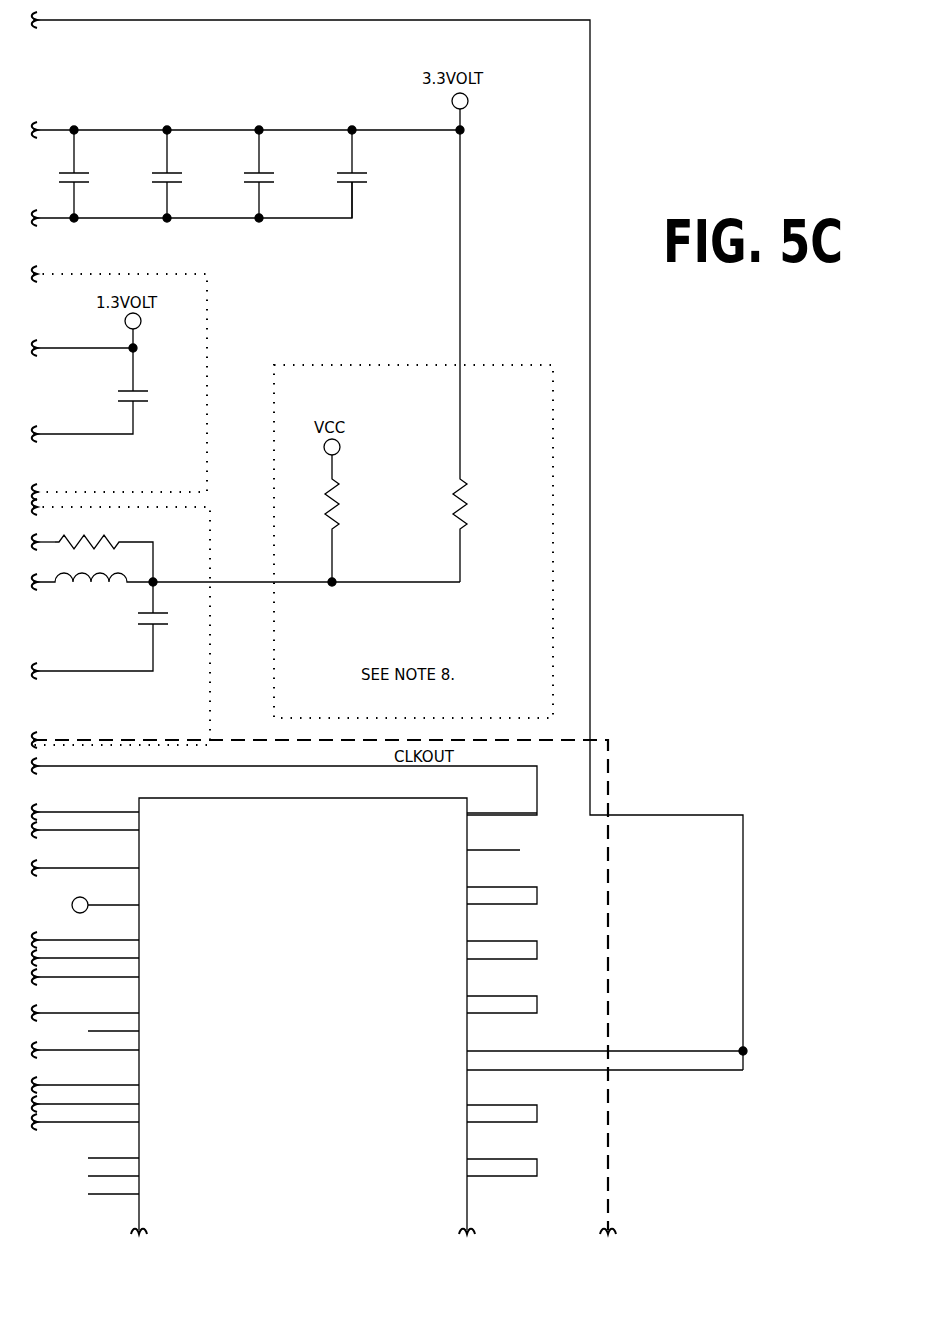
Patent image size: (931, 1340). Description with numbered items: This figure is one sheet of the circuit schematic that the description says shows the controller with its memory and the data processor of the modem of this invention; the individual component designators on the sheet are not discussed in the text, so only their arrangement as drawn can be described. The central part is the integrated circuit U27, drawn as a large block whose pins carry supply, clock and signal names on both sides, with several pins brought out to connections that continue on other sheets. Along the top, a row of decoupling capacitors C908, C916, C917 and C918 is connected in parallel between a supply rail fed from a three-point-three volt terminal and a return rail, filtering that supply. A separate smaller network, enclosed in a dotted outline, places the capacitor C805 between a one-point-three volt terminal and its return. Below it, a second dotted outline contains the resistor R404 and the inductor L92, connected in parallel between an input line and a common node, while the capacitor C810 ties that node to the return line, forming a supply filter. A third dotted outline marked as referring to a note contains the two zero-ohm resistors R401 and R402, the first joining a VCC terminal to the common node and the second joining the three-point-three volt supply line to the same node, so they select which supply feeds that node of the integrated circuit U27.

The capacitor 0.1uF C908 is at (94, 174).
The capacitor 4700pF C916 is at (193, 174).
The capacitor 0.1uF C917 is at (279, 174).
The capacitor 0.1uF C918 is at (372, 174).
The capacitor 0.1uF C805 is at (90, 391).
The resistor R404 is at (93, 550).
The inductor 10uH L92 is at (93, 588).
The capacitor 0.1uF C810 is at (100, 626).
The resistor 0 ohm R401 is at (356, 505).
The resistor 0 ohm R402 is at (484, 505).
The integrated circuit U27 is at (284, 1006).